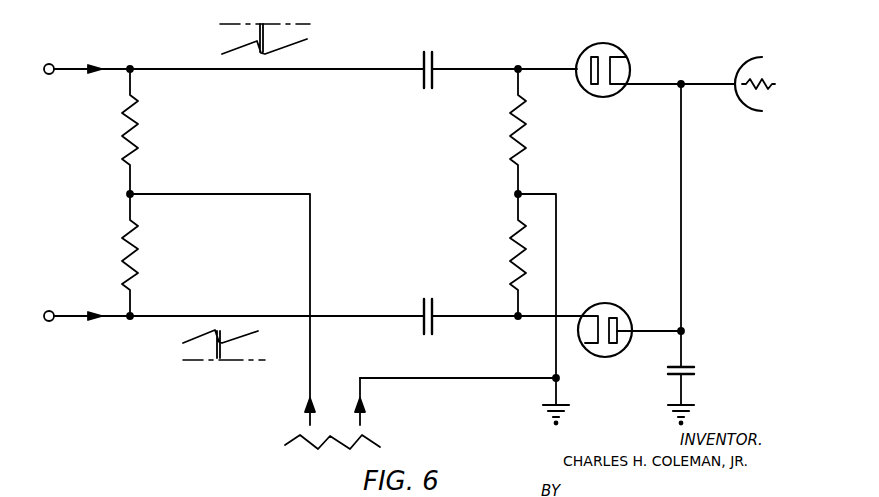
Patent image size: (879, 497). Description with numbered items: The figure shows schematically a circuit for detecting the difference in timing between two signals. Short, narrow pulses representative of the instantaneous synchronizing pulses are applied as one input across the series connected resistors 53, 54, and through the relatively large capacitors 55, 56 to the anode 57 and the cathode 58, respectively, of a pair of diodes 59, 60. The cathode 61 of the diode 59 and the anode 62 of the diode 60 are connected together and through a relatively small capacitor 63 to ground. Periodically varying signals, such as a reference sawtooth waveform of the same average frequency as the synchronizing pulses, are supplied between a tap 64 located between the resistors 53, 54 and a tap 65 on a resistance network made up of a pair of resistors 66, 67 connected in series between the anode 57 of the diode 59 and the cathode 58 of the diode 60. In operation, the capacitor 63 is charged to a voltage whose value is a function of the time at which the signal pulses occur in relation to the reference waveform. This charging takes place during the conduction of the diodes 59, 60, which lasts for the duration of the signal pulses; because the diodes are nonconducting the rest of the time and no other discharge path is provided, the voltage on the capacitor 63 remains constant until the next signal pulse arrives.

The resistor 53 is at (136, 150).
The resistor 54 is at (136, 275).
The capacitor 55 is at (434, 54).
The capacitor 56 is at (433, 334).
The anode 57 is at (591, 58).
The cathode 58 is at (589, 343).
The diode 59 is at (621, 45).
The diode 60 is at (623, 306).
The cathode 61 is at (612, 70).
The anode 62 is at (614, 340).
The capacitor 63 is at (694, 372).
The tap 64 is at (133, 192).
The tap 65 is at (516, 194).
The resistor 66 is at (522, 152).
The resistor 67 is at (514, 268).